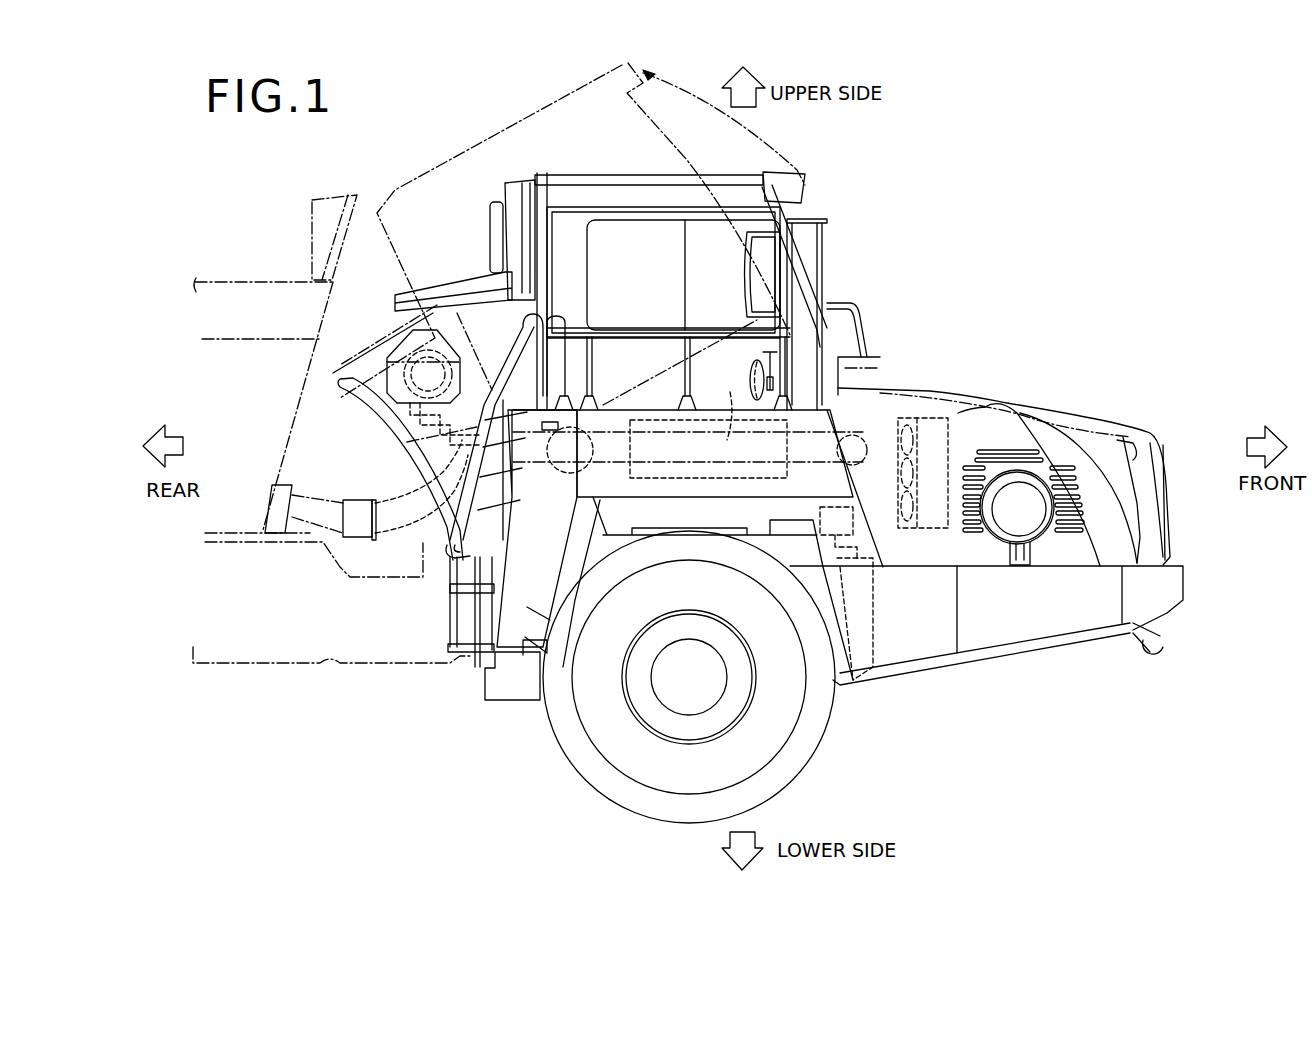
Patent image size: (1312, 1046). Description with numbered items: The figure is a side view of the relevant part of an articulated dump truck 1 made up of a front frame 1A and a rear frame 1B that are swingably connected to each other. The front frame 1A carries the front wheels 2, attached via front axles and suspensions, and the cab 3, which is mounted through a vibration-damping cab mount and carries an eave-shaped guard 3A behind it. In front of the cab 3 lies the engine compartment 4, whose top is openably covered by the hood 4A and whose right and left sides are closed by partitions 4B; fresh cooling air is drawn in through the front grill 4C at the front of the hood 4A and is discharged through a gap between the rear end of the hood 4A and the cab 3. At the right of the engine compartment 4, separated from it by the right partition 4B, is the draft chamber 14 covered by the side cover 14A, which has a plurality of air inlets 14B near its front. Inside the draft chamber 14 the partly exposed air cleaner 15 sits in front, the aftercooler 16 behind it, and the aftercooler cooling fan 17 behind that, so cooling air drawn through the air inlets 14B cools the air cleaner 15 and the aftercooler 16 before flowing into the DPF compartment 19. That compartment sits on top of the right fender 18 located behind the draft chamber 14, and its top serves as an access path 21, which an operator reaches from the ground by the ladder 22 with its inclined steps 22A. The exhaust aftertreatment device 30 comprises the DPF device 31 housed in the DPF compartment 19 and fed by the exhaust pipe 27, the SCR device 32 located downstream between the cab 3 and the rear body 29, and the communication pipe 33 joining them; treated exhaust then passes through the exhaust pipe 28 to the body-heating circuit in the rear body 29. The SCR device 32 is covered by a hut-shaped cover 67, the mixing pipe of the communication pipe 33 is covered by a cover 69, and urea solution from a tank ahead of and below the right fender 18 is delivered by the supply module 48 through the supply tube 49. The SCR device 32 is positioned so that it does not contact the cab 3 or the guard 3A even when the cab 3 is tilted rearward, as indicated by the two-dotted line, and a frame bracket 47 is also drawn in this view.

The dump truck 1 is at (954, 178).
The front frame 1A is at (513, 700).
The rear frame 1B is at (262, 665).
The front wheels 2 is at (805, 758).
The cab 3 is at (732, 195).
The guard 3A is at (430, 290).
The engine compartment 4 is at (1055, 406).
The hood 4A is at (1098, 405).
The partitions 4B is at (1125, 410).
The front grill 4C is at (1167, 453).
The draft chamber 14 is at (1005, 430).
The side cover 14A is at (963, 418).
The air inlets 14B is at (1080, 505).
The air cleaner 15 is at (1010, 525).
The aftercooler 16 is at (938, 425).
The aftercooler cooling fan 17 is at (908, 418).
The right fender 18 is at (673, 452).
The DPF compartment 19 is at (727, 404).
The access path 21 is at (620, 405).
The ladder 22 is at (440, 563).
The steps 22A is at (465, 596).
The exhaust pipe 27 is at (868, 437).
The exhaust pipe 28 is at (312, 503).
The rear body 29 is at (265, 281).
The exhaust aftertreatment device 30 is at (555, 497).
The DPF device 31 is at (718, 488).
The SCR device 32 is at (443, 340).
The communication pipe 33 is at (560, 484).
The front bumper frame 47 is at (877, 690).
The supply module 48 is at (857, 523).
The supply tube 49 is at (620, 487).
The hut-shaped cover 67 is at (398, 395).
The cover 69 is at (405, 472).